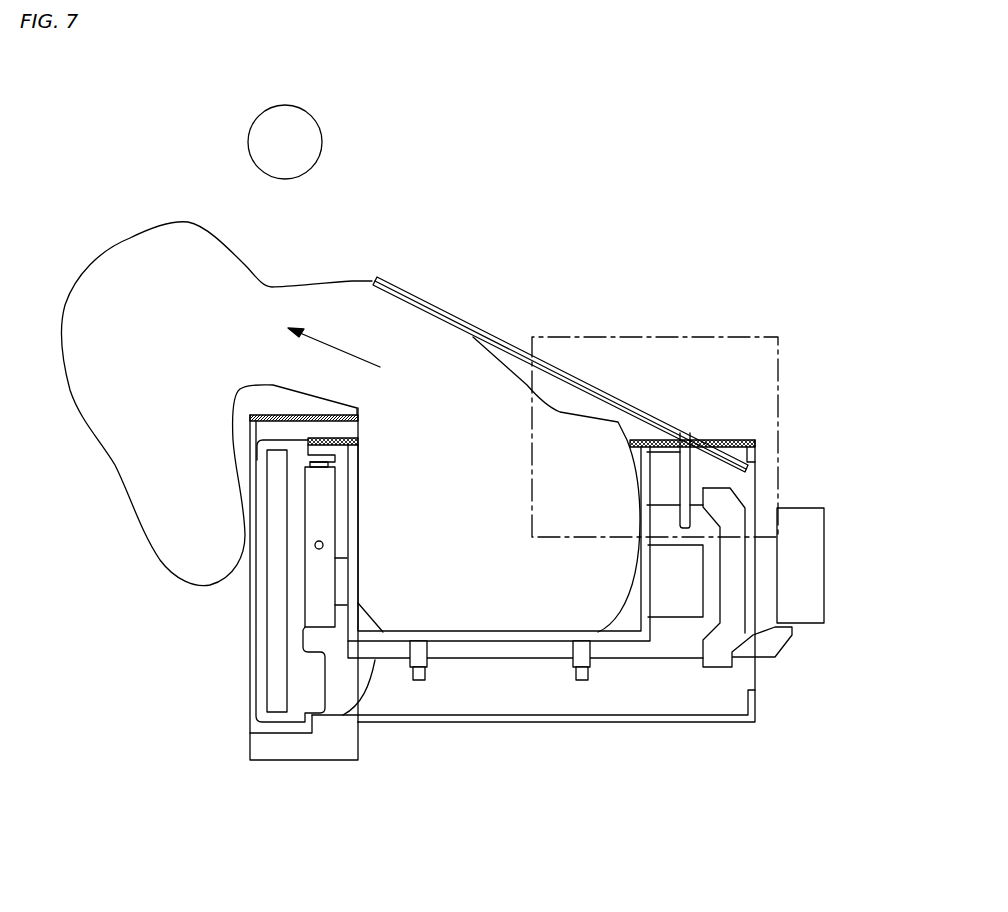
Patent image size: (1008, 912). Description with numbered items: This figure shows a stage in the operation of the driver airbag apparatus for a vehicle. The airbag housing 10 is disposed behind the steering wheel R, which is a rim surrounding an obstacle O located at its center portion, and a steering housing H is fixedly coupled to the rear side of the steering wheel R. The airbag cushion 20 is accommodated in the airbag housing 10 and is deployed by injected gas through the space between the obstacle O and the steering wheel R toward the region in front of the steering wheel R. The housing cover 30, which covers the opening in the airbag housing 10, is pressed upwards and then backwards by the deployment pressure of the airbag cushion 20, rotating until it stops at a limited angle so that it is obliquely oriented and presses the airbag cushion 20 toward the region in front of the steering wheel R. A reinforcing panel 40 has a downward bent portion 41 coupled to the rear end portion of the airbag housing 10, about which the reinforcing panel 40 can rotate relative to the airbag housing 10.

The airbag housing 10 is at (493, 633).
The airbag cushion 20 is at (360, 393).
The housing cover 30 is at (560, 361).
The reinforcing panel 40 is at (493, 337).
The bent portion 41 is at (685, 473).
The steering wheel R is at (308, 143).
The steering housing H is at (808, 567).
The obstacle O is at (278, 640).